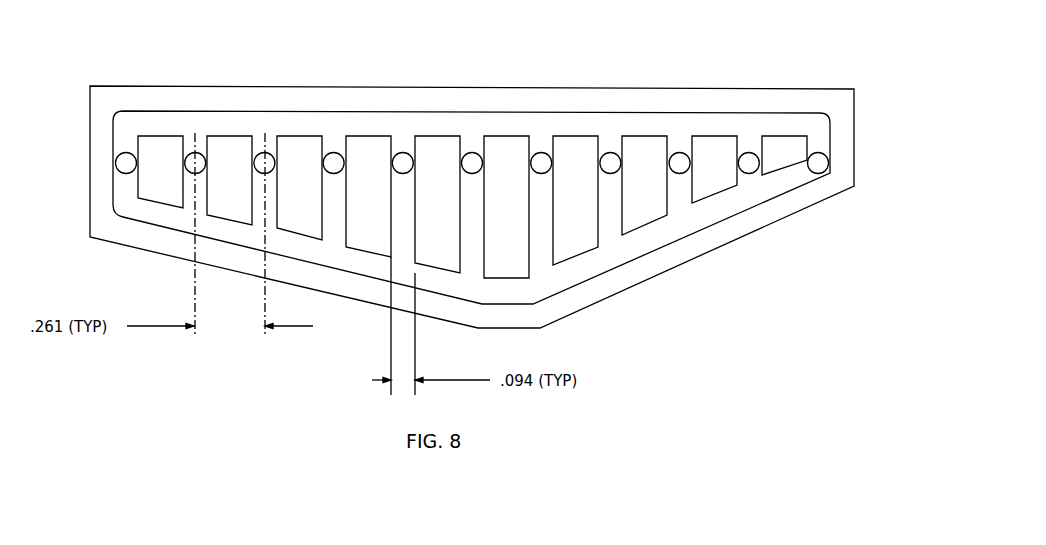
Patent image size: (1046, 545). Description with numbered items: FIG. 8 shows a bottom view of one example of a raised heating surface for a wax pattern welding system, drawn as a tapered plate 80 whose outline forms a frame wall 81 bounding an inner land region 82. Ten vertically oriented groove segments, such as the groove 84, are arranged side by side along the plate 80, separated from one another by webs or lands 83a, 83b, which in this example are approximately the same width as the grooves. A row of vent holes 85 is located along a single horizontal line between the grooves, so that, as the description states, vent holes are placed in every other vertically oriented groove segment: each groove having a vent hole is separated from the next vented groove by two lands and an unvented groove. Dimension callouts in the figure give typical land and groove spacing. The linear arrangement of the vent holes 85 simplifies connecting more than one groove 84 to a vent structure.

The bezel plate 80 is at (642, 88).
The frame wall 81 is at (633, 272).
The land between slots and wall 82 is at (650, 237).
The web between slots 83a is at (675, 195).
The web between slots 83b is at (608, 200).
The slot 84 is at (712, 170).
The hole 85 is at (754, 167).